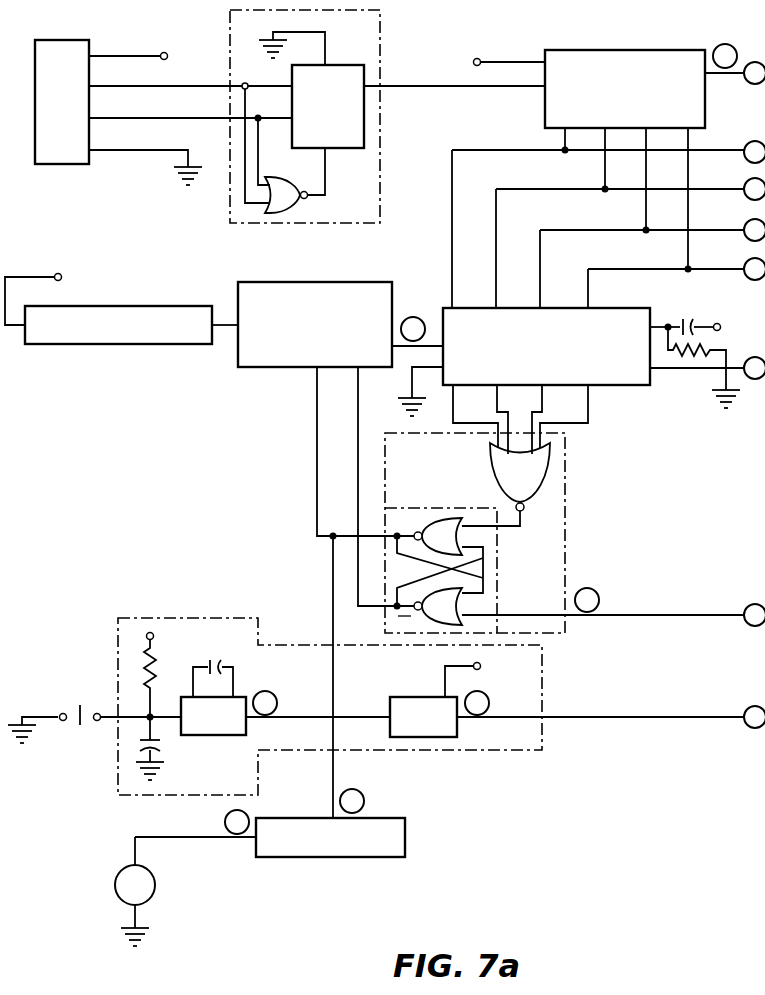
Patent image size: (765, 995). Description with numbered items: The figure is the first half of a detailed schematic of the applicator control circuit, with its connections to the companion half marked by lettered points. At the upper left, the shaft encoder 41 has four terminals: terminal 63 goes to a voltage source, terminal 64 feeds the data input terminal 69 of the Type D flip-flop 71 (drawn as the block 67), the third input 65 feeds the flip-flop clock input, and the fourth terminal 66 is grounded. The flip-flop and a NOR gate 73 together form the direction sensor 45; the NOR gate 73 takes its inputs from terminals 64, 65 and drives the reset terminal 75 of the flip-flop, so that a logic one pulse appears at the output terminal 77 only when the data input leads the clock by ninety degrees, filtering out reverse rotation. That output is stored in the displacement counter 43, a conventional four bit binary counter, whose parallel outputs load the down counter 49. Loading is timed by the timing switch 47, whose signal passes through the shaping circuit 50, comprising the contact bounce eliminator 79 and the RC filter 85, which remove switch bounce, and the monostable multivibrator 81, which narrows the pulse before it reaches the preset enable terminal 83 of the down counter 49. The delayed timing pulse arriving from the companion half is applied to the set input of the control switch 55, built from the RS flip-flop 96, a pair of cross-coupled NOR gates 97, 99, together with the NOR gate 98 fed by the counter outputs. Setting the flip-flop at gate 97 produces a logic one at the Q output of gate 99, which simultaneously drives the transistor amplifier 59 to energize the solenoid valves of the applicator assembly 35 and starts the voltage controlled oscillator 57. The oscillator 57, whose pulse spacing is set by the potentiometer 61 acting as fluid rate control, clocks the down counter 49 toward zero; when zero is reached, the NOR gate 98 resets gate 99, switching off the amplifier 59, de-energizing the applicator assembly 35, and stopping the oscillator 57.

The applicator assembly 35 is at (116, 877).
The shaft encoder 41 is at (62, 102).
The displacement counter 43 is at (605, 50).
The direction sensor 45 is at (380, 47).
The timing switch 47 is at (83, 725).
The down counter 49 is at (628, 385).
The shaping circuit 50 is at (228, 618).
The control switch 55 is at (566, 516).
The voltage controlled oscillator 57 is at (280, 367).
The transistor amplifier 59 is at (405, 837).
The potentiometer 61 is at (170, 306).
The terminal 63 is at (92, 56).
The terminal 64 is at (92, 86).
The third input 65 is at (92, 118).
The fourth terminal 66 is at (92, 150).
The flip-flop 67 is at (347, 65).
The input terminal 69 is at (290, 84).
The Type D flip-flop 71 is at (292, 117).
The NOR gate 73 is at (272, 214).
The reset terminal 75 is at (329, 150).
The output terminal 77 is at (364, 88).
The contact bounce eliminator 79 is at (246, 697).
The monostable multivibrator 81 is at (389, 703).
The preset enable terminal 83 is at (652, 382).
The RC filter 85 is at (102, 680).
The RS flip-flop 96 is at (498, 556).
The NOR gate 97 is at (466, 610).
The NOR gate 98 is at (552, 466).
The NOR gate 99 is at (452, 518).